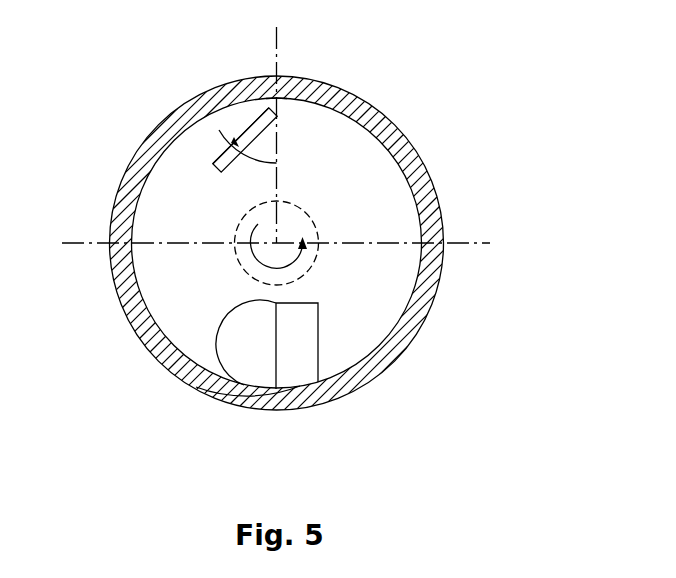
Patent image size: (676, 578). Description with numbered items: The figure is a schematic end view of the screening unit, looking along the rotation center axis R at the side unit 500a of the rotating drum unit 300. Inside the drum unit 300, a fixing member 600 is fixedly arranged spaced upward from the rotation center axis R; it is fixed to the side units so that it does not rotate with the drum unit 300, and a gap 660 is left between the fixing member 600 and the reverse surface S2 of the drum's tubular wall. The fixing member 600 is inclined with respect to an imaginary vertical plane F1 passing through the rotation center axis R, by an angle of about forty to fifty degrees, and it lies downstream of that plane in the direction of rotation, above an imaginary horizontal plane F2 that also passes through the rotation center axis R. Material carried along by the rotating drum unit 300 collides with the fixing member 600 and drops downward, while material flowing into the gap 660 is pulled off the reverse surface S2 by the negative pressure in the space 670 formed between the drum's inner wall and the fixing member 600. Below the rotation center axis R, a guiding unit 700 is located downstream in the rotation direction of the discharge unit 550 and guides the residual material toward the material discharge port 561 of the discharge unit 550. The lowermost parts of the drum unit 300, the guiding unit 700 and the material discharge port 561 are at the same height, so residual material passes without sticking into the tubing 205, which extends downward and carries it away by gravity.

The drum unit 300 is at (459, 15).
The side unit 500a is at (173, 167).
The space 670 is at (233, 124).
The gap 660 is at (284, 100).
The imaginary vertical plane F1 is at (278, 178).
The reverse surface S2 is at (406, 194).
The fixing member 600 is at (221, 169).
The rotation center axis R is at (277, 243).
The imaginary horizontal plane F2 is at (166, 247).
The material discharge port 561 is at (250, 343).
The guiding unit 700 is at (322, 313).
The tubing 205 is at (237, 352).
The discharge unit 550 is at (263, 362).